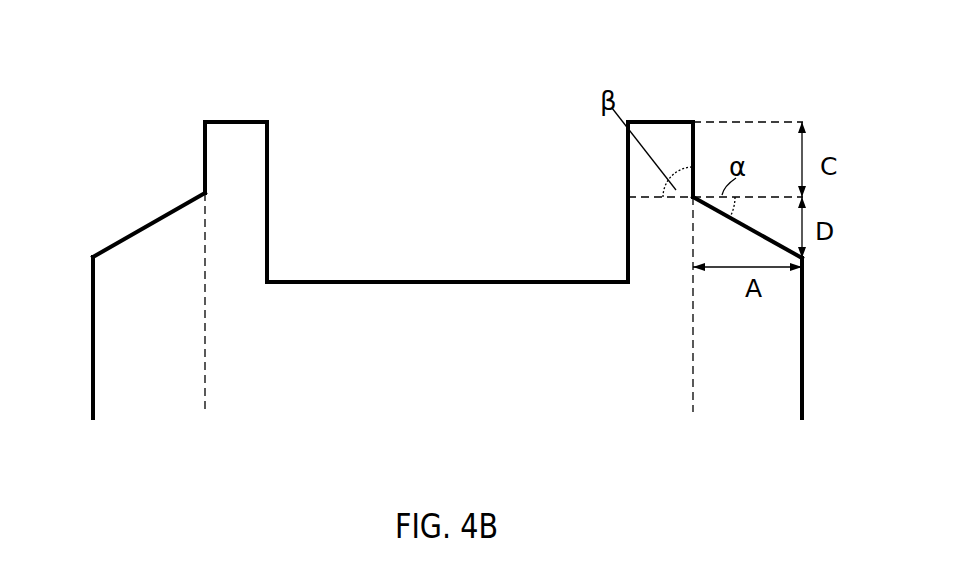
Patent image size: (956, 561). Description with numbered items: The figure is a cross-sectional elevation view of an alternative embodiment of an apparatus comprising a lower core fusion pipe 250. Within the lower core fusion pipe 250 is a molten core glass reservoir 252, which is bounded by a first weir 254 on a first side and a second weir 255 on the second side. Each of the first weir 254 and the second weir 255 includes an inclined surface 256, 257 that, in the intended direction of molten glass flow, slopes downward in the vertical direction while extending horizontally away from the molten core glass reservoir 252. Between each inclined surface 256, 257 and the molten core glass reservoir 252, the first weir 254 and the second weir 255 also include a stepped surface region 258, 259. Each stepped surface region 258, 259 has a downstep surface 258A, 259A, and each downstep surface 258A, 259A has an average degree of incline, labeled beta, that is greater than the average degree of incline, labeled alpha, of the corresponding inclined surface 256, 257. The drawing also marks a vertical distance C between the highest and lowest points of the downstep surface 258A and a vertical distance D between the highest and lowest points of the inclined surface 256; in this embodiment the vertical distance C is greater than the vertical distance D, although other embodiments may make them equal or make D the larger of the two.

The lower core fusion pipe 250 is at (361, 174).
The molten core glass reservoir 252 is at (462, 284).
The first weir 254 is at (798, 313).
The second weir 255 is at (101, 333).
The inclined surface 256 is at (753, 230).
The inclined surface 257 is at (148, 222).
The stepped surface region 258 is at (693, 108).
The downstep surface 258A is at (695, 140).
The stepped surface region 259 is at (268, 107).
The downstep surface 259A is at (205, 150).